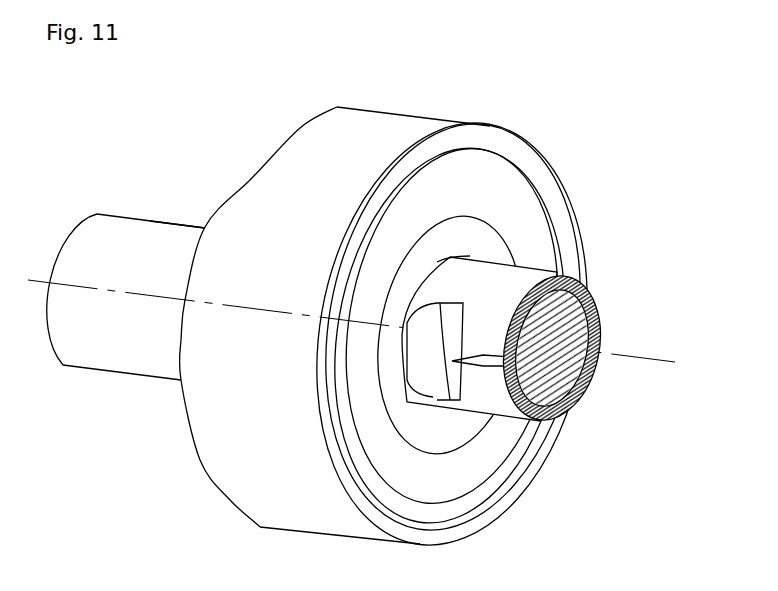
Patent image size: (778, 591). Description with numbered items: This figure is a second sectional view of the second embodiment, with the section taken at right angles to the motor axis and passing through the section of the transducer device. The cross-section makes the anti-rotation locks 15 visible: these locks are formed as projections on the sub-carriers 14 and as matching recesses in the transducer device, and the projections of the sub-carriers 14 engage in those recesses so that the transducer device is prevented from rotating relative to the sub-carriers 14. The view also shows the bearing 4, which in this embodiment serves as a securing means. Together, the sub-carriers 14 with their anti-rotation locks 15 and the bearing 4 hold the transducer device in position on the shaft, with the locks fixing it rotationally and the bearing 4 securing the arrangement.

The bearing 4 is at (434, 114).
The sub-carriers 14 is at (503, 298).
The anti-rotation locks 15 is at (557, 277).